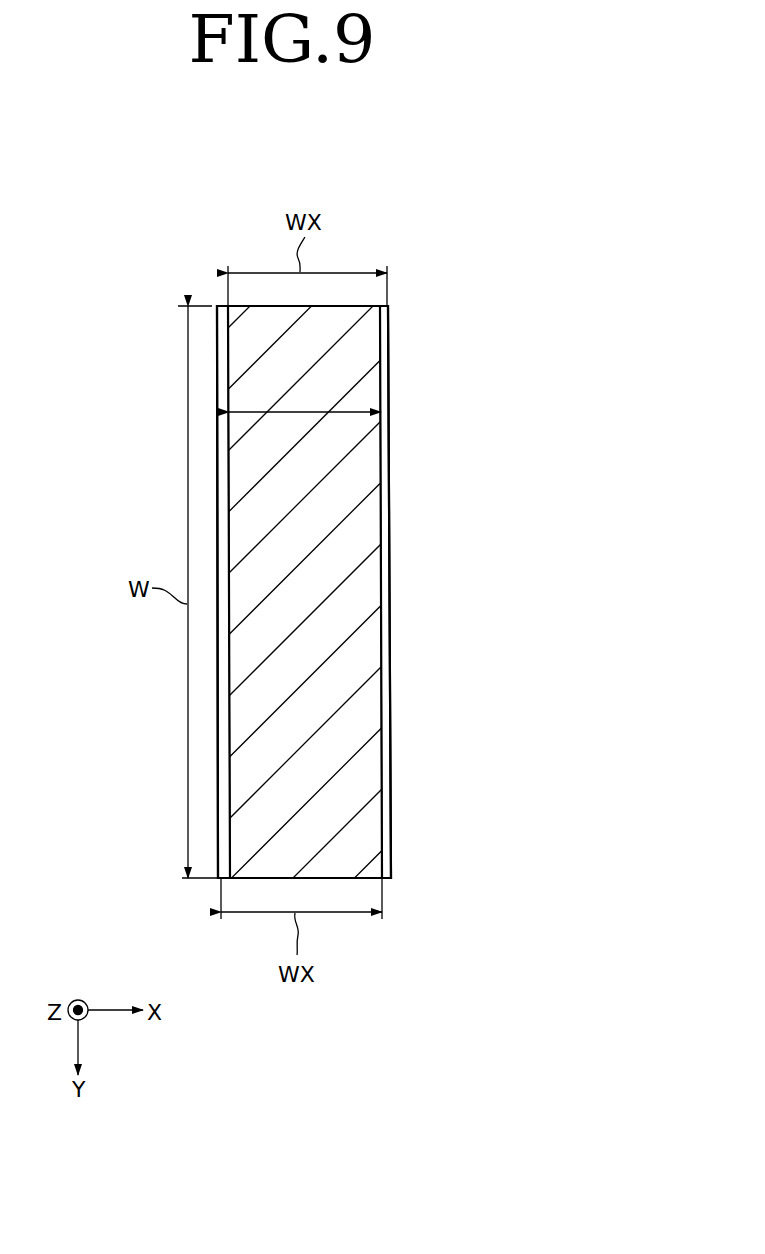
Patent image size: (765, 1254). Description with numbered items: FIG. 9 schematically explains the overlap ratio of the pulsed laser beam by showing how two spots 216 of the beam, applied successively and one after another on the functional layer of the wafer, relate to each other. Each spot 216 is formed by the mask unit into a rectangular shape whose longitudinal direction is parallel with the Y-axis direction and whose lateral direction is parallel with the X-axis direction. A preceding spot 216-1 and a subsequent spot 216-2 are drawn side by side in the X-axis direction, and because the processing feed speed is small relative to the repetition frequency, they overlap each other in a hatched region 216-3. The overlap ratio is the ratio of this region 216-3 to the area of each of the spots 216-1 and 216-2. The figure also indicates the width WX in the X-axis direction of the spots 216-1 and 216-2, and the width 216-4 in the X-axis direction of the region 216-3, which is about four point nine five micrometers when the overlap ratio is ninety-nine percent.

The spot 216 is at (390, 826).
The preceding spot 216-1 is at (219, 852).
The subsequent spot 216-2 is at (390, 826).
The region 216-3 is at (329, 495).
The width 216-4 is at (303, 412).